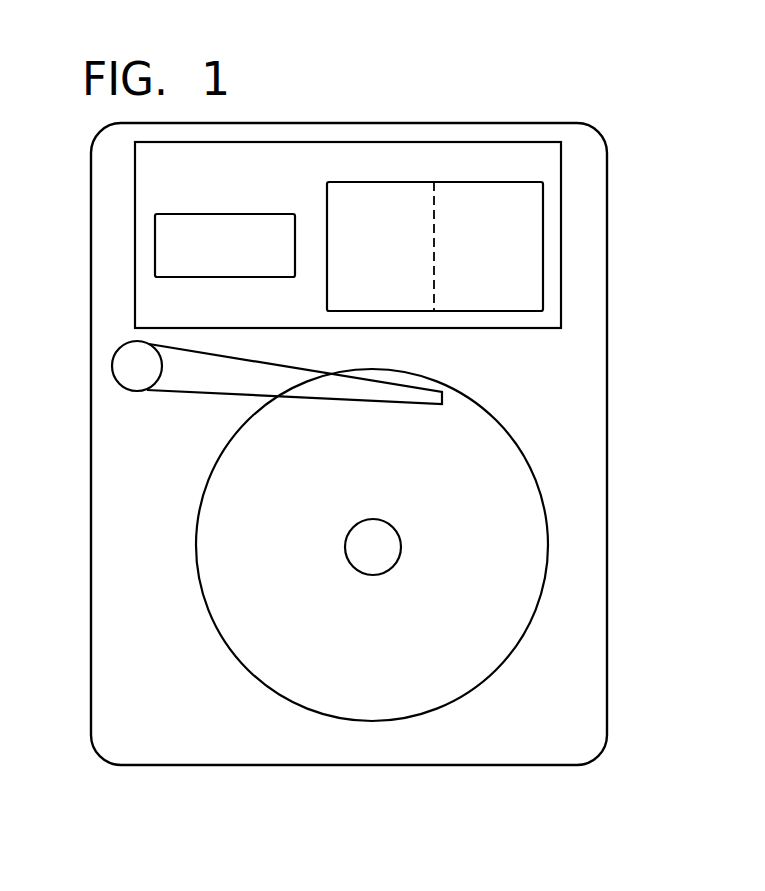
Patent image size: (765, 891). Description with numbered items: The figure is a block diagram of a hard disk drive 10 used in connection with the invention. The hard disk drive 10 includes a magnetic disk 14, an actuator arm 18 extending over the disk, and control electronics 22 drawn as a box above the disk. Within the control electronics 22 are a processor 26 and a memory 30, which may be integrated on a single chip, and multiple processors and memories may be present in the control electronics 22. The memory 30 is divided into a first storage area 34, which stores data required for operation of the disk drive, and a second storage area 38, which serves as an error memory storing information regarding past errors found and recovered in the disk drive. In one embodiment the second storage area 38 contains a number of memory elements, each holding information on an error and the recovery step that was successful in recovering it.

The hard disk drive 10 is at (617, 130).
The magnetic disk 14 is at (480, 544).
The actuator arm 18 is at (168, 394).
The control electronics 22 is at (568, 218).
The processor 26 is at (195, 279).
The memory 30 is at (395, 250).
The first storage area 34 is at (392, 300).
The second storage area 38 is at (499, 300).